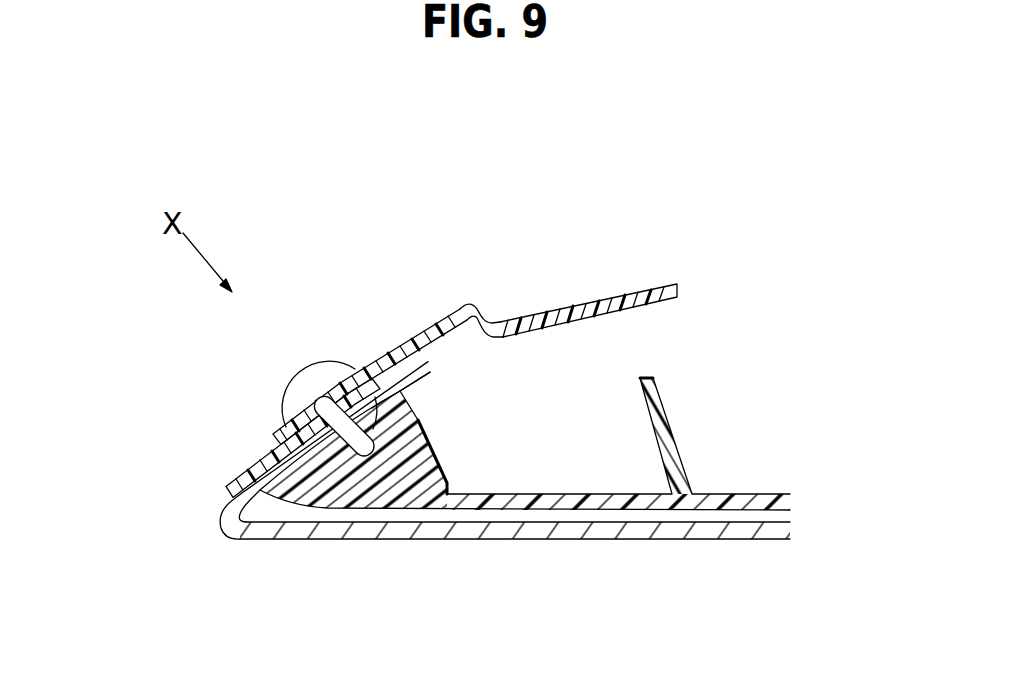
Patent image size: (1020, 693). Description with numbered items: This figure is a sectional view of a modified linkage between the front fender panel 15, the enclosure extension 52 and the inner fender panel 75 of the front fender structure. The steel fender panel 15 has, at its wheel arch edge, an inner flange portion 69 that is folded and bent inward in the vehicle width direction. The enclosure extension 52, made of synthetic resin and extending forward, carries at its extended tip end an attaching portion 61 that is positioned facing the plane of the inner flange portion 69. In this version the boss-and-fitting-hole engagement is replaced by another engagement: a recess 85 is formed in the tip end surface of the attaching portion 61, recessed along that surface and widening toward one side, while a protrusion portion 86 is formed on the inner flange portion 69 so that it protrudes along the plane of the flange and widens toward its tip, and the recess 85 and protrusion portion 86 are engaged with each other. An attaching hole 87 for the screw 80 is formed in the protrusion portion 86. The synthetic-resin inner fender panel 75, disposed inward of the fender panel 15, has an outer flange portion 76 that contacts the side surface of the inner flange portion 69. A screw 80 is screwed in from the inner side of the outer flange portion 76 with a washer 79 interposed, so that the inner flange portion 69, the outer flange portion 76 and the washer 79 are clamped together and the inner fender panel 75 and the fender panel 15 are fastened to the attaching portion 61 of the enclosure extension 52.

The front fender panel 15 is at (525, 540).
The enclosure extension 52 is at (598, 511).
The attaching portion 61 is at (417, 393).
The inner flange portion 69 is at (250, 474).
The inner fender panel 75 is at (640, 291).
The outer flange portion 76 is at (447, 315).
The washer 79 is at (365, 366).
The screw 80 is at (323, 362).
The recess 85 is at (377, 412).
The protrusion portion 86 is at (408, 348).
The attaching hole 87 is at (314, 398).